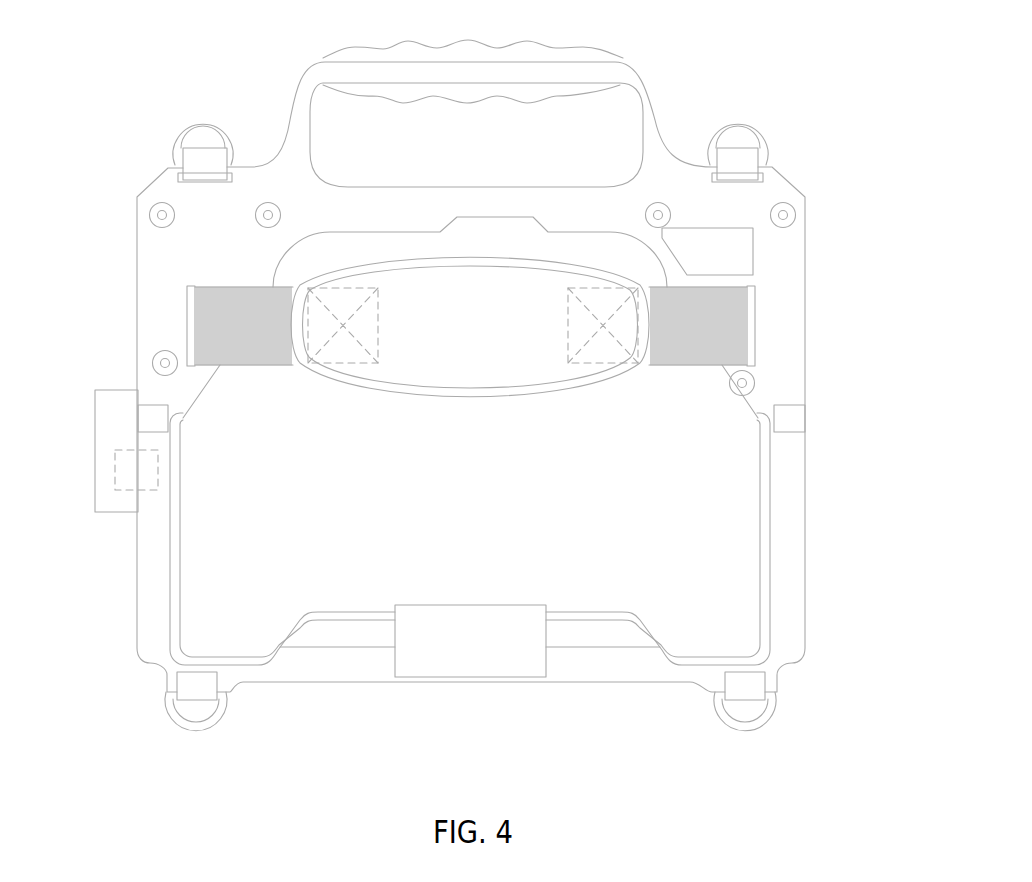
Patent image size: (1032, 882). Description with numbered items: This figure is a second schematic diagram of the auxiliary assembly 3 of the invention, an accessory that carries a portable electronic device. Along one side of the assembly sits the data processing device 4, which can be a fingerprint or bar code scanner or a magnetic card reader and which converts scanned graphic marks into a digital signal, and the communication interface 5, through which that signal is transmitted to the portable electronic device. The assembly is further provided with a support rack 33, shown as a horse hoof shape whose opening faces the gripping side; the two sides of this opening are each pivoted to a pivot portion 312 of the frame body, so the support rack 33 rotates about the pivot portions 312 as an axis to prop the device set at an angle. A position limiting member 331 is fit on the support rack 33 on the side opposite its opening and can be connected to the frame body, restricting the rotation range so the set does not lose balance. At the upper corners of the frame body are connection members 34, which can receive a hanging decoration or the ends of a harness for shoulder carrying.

The auxiliary assembly 3 is at (138, 71).
The connection member 34 is at (757, 130).
The pivot portion 312 is at (792, 417).
The data processing device 4 is at (117, 427).
The communication interface 5 is at (125, 477).
The support rack 33 is at (178, 565).
The position limiting member 331 is at (480, 665).